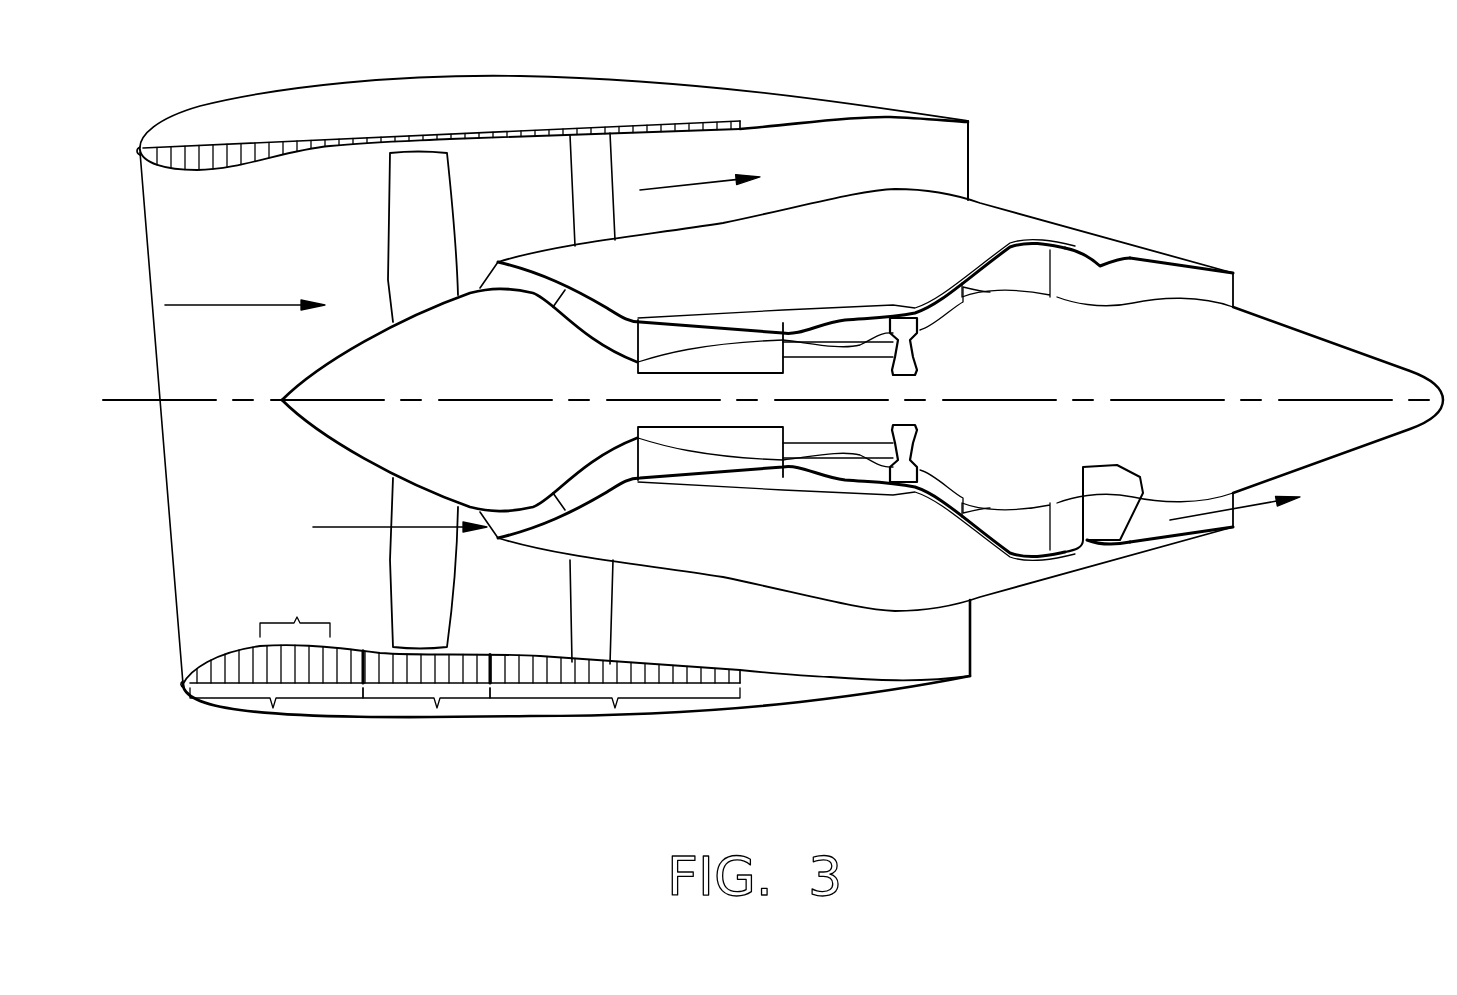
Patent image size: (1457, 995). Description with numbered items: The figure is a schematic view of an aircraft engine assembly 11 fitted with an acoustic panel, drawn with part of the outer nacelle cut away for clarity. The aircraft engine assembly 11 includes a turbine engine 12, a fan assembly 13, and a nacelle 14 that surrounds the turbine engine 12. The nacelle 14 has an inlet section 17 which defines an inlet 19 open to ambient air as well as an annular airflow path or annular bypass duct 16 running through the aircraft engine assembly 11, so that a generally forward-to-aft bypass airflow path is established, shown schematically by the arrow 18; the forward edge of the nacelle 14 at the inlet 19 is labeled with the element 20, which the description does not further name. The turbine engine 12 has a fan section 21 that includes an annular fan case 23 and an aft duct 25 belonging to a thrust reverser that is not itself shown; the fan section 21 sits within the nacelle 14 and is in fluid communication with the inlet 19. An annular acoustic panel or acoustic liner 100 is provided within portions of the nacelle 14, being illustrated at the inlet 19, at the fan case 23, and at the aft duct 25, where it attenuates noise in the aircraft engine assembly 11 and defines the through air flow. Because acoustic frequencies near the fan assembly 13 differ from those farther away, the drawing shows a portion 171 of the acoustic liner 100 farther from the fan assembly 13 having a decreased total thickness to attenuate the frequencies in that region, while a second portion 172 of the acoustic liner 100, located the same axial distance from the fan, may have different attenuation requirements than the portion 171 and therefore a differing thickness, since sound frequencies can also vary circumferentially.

The aircraft engine assembly 11 is at (544, 86).
The turbine engine 12 is at (590, 258).
The fan assembly 13 is at (420, 268).
The nacelle 14 is at (163, 40).
The annular bypass duct 16 is at (488, 163).
The inlet section 17 is at (273, 708).
The bypass airflow path arrow 18 is at (678, 186).
The inlet 19 is at (197, 460).
The inlet lip 20 is at (203, 147).
The fan section 21 is at (506, 730).
The annular fan case 23 is at (437, 708).
The aft duct 25 is at (615, 708).
The acoustic liner 100 is at (440, 436).
The portion of the acoustic liner 171 is at (293, 180).
The second portion of the acoustic liner 172 is at (297, 617).